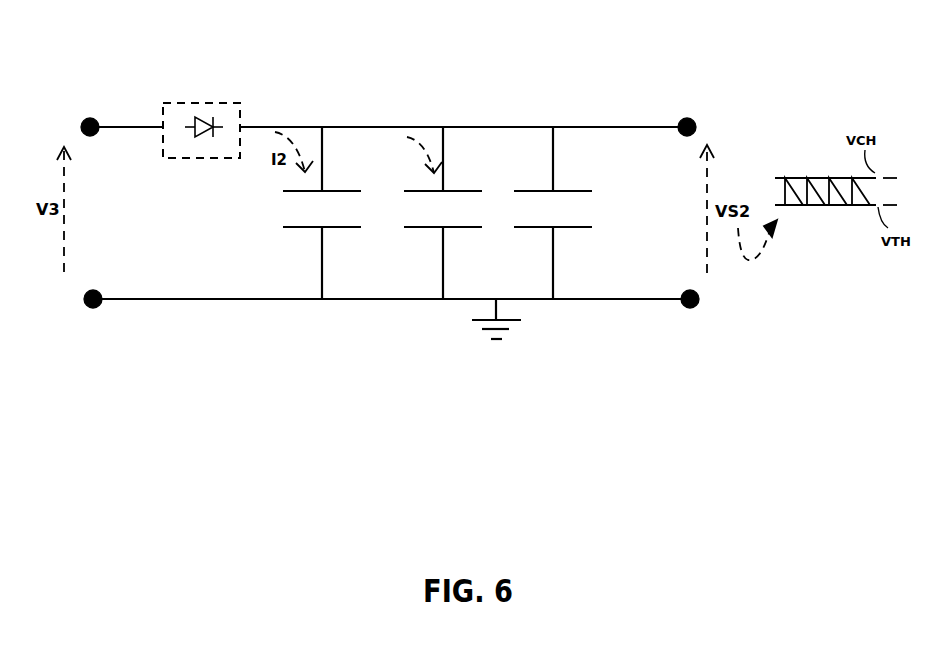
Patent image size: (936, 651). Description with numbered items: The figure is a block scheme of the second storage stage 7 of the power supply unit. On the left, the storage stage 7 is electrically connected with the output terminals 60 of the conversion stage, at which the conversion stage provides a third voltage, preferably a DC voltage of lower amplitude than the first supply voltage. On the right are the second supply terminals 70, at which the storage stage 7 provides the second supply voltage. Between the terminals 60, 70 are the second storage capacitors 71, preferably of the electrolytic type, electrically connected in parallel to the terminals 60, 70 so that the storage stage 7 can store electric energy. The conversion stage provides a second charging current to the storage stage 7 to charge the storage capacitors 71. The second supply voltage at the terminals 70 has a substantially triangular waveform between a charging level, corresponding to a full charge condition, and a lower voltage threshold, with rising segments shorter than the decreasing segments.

The second storage stage 7 is at (400, 408).
The output terminals 60 is at (98, 320).
The second supply terminals 70 is at (690, 318).
The second storage capacitors 71 is at (182, 92).